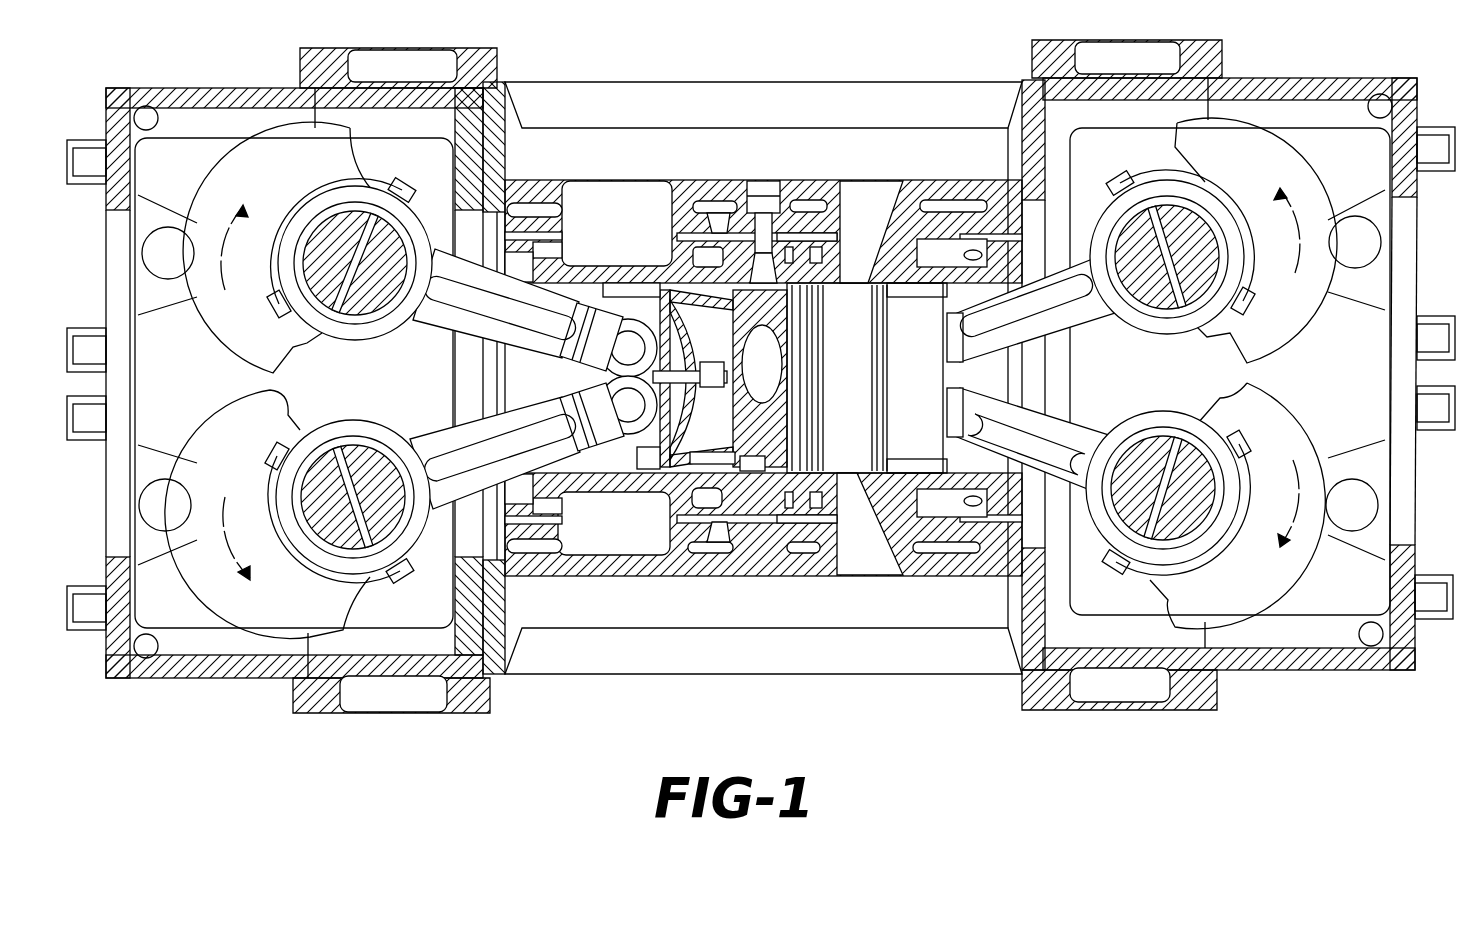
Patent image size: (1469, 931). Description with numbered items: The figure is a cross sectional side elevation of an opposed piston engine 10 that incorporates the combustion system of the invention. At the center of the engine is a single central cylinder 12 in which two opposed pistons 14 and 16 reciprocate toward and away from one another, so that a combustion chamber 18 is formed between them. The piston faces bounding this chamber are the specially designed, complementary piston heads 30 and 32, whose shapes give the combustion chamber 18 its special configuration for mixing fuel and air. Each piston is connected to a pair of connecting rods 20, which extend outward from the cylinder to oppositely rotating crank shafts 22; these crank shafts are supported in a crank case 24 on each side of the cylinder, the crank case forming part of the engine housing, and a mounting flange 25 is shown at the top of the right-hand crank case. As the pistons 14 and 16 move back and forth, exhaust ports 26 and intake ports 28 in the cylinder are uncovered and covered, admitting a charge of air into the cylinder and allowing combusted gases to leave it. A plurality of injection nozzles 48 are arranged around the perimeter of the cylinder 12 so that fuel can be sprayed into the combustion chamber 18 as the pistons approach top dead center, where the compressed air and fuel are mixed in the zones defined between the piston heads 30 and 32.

The opposed piston engine 10 is at (918, 52).
The central single cylinder 12 is at (945, 478).
The piston 14 is at (610, 283).
The piston 16 is at (850, 283).
The combustion chamber 18 is at (805, 240).
The connecting rods 20 is at (430, 437).
The crank shafts 22 is at (378, 325).
The crank case 24 is at (237, 92).
The mounting flange 25 is at (1172, 40).
The exhaust ports 26 is at (905, 225).
The intake ports 28 is at (670, 262).
The piston head 30 is at (747, 480).
The piston head 32 is at (767, 473).
The injection nozzles 48 is at (778, 165).